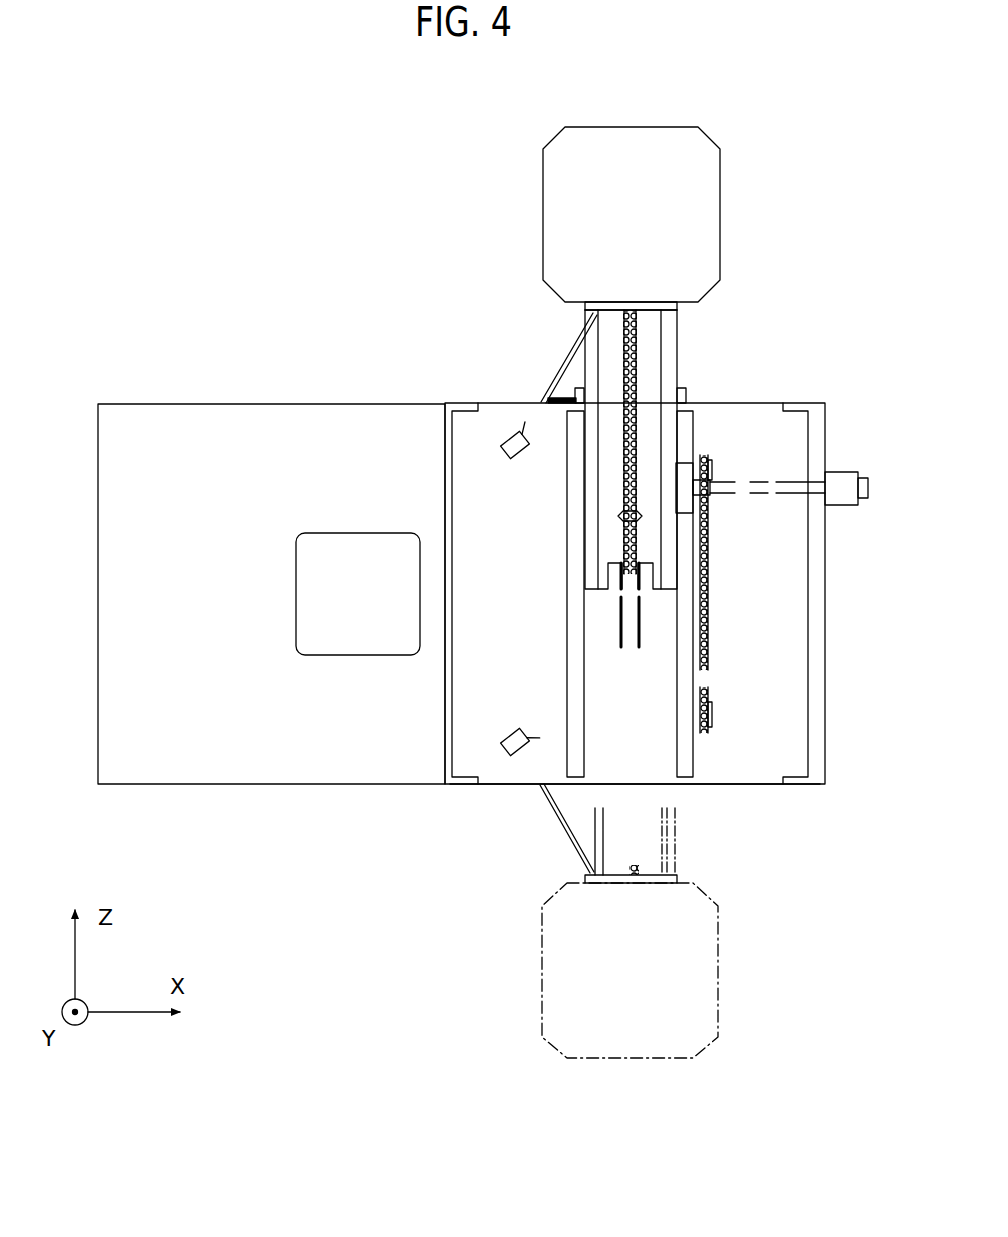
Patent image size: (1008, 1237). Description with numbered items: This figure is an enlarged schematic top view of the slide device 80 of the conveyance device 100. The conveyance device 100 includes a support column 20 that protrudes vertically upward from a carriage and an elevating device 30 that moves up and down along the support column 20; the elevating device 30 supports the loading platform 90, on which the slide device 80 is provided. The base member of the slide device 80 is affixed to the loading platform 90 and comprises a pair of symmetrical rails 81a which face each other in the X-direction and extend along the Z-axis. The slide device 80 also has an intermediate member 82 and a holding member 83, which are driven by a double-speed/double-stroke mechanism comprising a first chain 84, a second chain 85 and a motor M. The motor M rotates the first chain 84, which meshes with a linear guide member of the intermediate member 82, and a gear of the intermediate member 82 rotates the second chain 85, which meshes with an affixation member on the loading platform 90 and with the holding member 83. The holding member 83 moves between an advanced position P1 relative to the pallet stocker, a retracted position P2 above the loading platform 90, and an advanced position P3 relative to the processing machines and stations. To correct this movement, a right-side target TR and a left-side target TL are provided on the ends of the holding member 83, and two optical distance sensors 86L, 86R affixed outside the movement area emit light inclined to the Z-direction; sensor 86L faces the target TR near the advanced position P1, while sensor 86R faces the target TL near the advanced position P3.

The conveyance device 100 is at (166, 152).
The elevating device 30 is at (208, 472).
The support column 20 is at (360, 568).
The slide device 80 is at (770, 754).
The loading platform 90 is at (730, 775).
The rails 81a is at (575, 679).
The intermediate member 82 is at (652, 357).
The second chain 85 is at (620, 516).
The optical distance sensor 86L is at (508, 438).
The optical distance sensor 86R is at (507, 758).
The motor M is at (840, 490).
The first chain 84 is at (708, 548).
The holding member 83 is at (662, 208).
The right-side target TR is at (663, 309).
The left-side target TL is at (660, 880).
The advanced position P1 is at (527, 213).
The retracted position P2 is at (740, 590).
The advanced position P3 is at (532, 968).